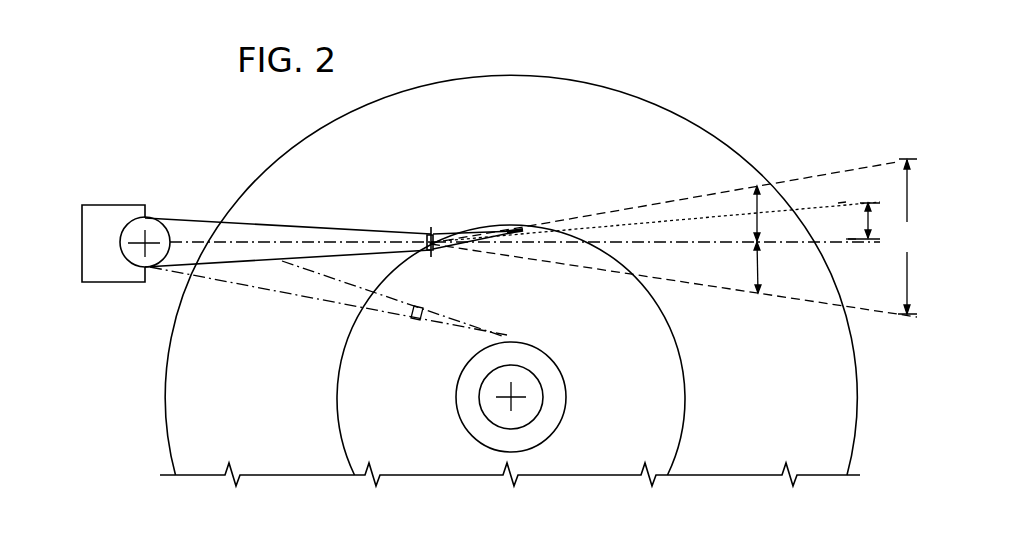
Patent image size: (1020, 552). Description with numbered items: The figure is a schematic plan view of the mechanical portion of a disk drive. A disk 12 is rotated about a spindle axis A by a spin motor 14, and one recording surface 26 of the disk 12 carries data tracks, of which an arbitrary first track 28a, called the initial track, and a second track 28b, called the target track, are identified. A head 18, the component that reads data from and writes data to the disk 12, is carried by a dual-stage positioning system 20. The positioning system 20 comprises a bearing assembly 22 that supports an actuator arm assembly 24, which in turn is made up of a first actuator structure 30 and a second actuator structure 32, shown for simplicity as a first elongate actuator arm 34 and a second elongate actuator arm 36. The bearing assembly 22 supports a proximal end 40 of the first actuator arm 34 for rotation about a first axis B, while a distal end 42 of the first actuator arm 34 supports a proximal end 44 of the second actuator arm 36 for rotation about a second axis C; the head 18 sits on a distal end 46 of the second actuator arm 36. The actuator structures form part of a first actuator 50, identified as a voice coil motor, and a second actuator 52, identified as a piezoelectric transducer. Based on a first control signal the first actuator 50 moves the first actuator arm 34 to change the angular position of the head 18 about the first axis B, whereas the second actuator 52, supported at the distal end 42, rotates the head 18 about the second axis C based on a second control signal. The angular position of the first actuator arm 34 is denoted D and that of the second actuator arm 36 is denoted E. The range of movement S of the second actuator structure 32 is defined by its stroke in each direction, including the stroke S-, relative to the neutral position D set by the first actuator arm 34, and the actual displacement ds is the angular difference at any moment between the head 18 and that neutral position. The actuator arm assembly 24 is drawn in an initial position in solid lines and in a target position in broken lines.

The disk 12 is at (555, 97).
The spin motor 14 is at (490, 389).
The head 18 is at (522, 230).
The positioning system 20 is at (378, 180).
The bearing assembly 22 is at (152, 230).
The actuator arm assembly 24 is at (323, 208).
The recording surface 26 is at (513, 144).
The first track 28a is at (334, 393).
The second track 28b is at (453, 412).
The first actuator structure 30 is at (294, 183).
The second actuator structure 32 is at (495, 290).
The first actuator arm 34 is at (250, 235).
The second actuator arm 36 is at (474, 241).
The proximal end 40 is at (183, 211).
The distal end 42 is at (419, 227).
The proximal end 44 is at (444, 226).
The distal end 46 is at (506, 220).
The first actuator 50 is at (105, 209).
The second actuator 52 is at (428, 229).
The spindle axis A is at (509, 398).
The first axis B is at (144, 244).
The second axis C is at (433, 249).
The angular position of the first actuator arm D is at (850, 240).
The angular position of the second actuator arm E is at (840, 203).
The range of movement S is at (907, 236).
The stroke S- is at (760, 262).
The actual displacement ds is at (868, 221).